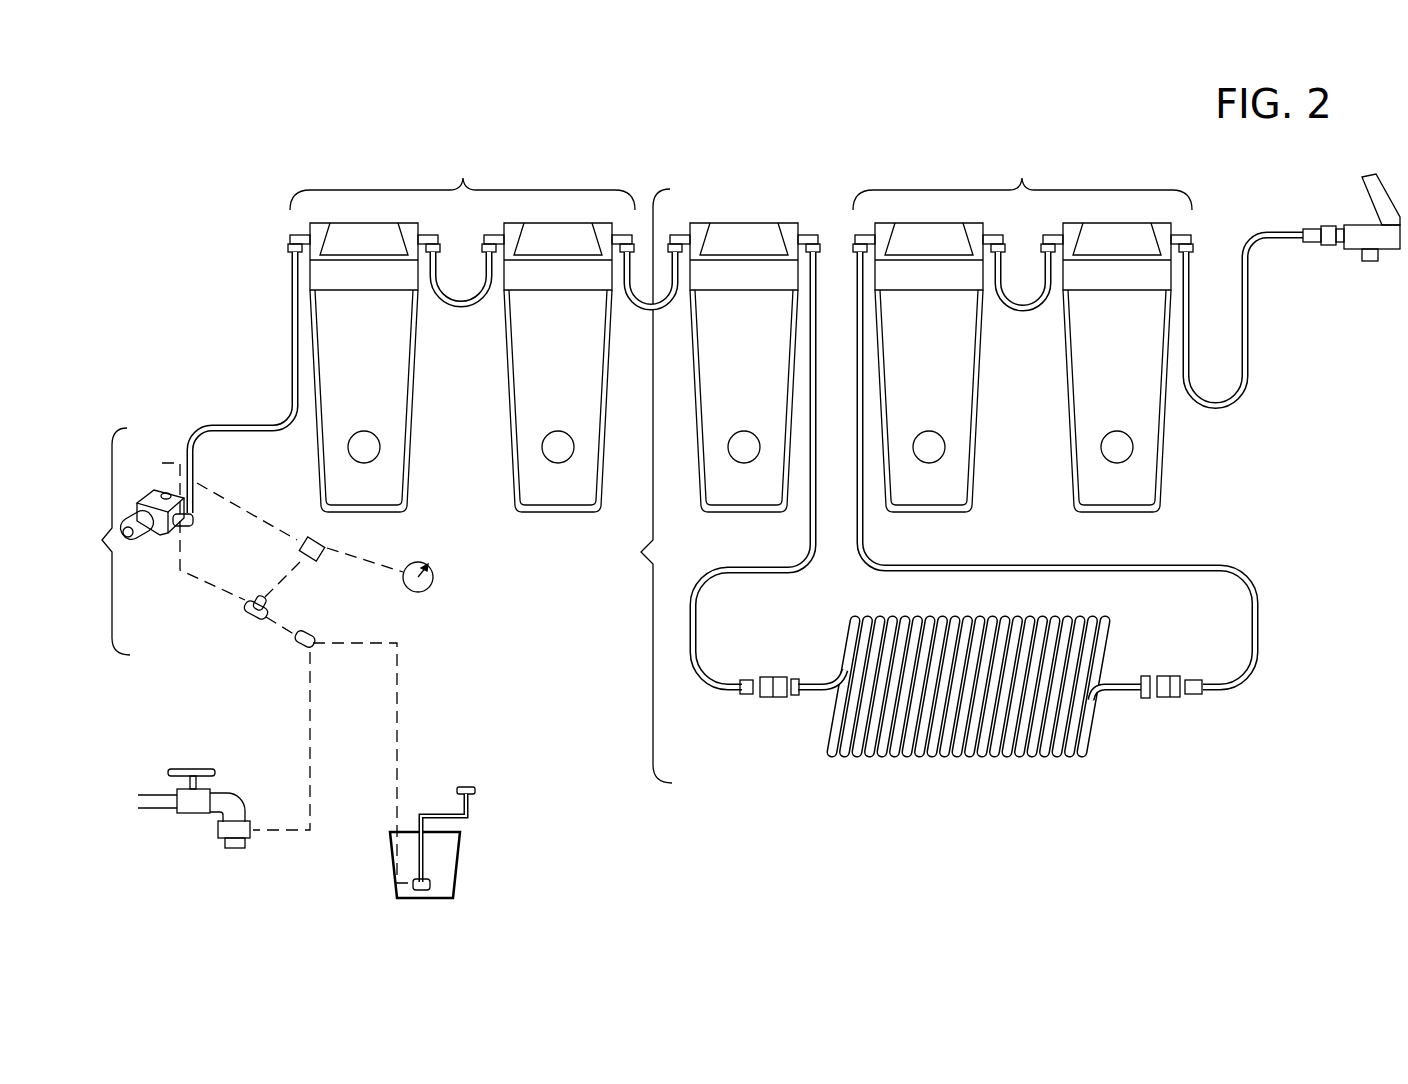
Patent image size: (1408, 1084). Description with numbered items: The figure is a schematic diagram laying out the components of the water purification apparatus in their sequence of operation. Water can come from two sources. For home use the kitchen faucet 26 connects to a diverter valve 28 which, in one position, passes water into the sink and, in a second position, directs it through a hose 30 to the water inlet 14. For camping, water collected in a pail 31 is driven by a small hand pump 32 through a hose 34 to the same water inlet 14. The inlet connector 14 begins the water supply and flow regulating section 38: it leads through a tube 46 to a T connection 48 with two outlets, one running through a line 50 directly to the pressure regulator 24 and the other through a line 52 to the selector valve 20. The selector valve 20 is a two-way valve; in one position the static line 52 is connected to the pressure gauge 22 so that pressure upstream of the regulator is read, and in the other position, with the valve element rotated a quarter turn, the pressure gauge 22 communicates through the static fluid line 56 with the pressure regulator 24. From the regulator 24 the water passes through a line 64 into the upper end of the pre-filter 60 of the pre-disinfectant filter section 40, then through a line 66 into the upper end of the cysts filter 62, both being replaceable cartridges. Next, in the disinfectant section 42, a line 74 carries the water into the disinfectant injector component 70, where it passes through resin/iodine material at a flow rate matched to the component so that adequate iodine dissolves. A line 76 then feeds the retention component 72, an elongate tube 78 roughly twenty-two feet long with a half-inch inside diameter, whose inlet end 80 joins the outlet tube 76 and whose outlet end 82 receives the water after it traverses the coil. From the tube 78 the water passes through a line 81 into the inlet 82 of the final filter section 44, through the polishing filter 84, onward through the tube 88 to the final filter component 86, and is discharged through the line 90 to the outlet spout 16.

The water inlet 14 is at (312, 635).
The outlet spout 16 is at (1362, 255).
The selector valve 20 is at (300, 533).
The pressure gauge 22 is at (440, 576).
The pressure regulator 24 is at (133, 507).
The kitchen faucet 26 is at (182, 758).
The diverter valve 28 is at (218, 830).
The hose 30 is at (305, 697).
The pail 31 is at (445, 875).
The hand pump 32 is at (425, 810).
The hose 34 is at (405, 692).
The water supply and flow regulating section 38 is at (99, 541).
The pre-disinfectant filter section 40 is at (462, 178).
The disinfectant section 42 is at (637, 486).
The final filter section 44 is at (1022, 178).
The tube 46 is at (275, 622).
The T connection 48 is at (250, 614).
The line 50 is at (207, 583).
The line 52 is at (292, 573).
The static fluid line 56 is at (215, 487).
The pre-filter 60 is at (392, 462).
The cysts filter 62 is at (528, 458).
The line 64 is at (238, 428).
The line 66 is at (461, 310).
The disinfectant injector component 70 is at (727, 490).
The retention component 72 is at (932, 705).
The line 74 is at (648, 308).
The line 76 is at (753, 469).
The elongate tube 78 is at (865, 615).
The inlet end 80 is at (802, 680).
The line 81 is at (897, 562).
The outlet end 82 is at (1141, 680).
The polishing filter 84 is at (960, 477).
The final filter component 86 is at (1140, 470).
The tube 88 is at (1022, 310).
The line 90 is at (1245, 372).